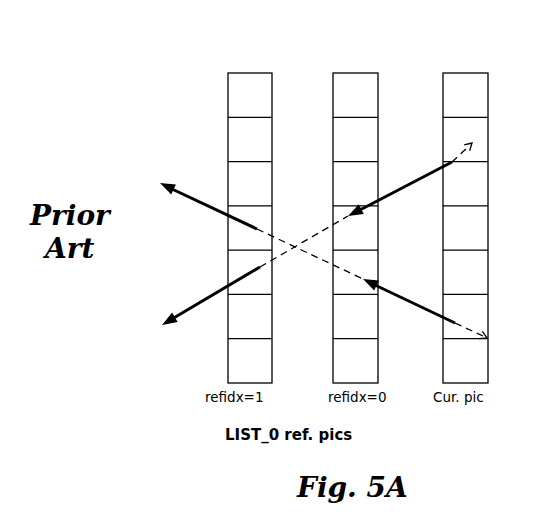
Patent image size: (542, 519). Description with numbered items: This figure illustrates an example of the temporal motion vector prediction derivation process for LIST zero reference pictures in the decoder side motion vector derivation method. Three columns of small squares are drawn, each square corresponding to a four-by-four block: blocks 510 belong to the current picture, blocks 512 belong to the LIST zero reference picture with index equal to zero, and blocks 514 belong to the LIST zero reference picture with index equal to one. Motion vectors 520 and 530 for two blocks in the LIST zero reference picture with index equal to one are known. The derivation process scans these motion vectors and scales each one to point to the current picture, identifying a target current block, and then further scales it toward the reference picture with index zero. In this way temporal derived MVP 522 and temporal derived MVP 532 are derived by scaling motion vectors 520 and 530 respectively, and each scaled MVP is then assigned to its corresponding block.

The blocks of the current picture 510 is at (465, 60).
The blocks of LIST_0 reference picture with index equal to 0 512 is at (355, 60).
The blocks of LIST_0 reference picture with index equal to 1 514 is at (250, 60).
The motion vector 520 is at (205, 298).
The temporal derived MVP 522 is at (393, 180).
The motion vector 530 is at (218, 208).
The temporal derived MVP 532 is at (425, 306).